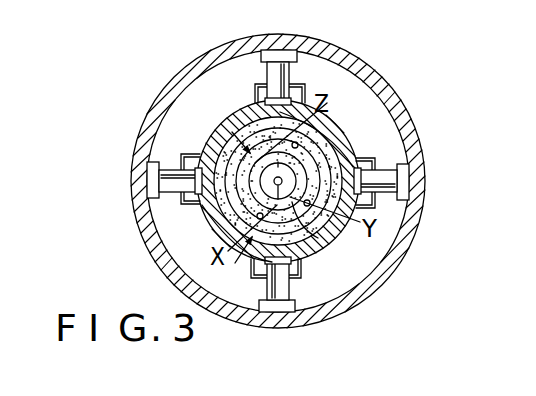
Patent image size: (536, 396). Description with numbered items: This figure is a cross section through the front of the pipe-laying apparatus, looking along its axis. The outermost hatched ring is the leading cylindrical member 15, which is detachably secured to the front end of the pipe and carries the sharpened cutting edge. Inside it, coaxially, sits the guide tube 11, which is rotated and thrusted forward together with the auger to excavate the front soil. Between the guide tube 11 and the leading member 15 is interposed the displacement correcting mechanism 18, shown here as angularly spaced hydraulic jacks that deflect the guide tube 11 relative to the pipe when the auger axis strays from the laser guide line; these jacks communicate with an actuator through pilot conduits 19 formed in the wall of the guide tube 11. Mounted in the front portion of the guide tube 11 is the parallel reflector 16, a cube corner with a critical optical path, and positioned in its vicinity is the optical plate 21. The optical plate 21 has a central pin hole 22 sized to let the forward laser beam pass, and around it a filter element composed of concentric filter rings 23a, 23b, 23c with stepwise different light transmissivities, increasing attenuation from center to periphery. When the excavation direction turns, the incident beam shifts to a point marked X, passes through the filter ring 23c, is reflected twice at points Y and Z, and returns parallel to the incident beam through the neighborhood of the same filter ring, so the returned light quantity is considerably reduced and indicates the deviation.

The guide tube 11 is at (340, 128).
The leading cylindrical member 15 is at (400, 122).
The parallel reflector 16 is at (222, 128).
The displacement correcting mechanism 18 is at (258, 67).
The pilot conduits 19 is at (253, 90).
The optical plate 21 is at (250, 253).
The central pin hole 22 is at (295, 175).
The filter ring 23a is at (346, 138).
The filter ring 23b is at (318, 238).
The filter ring 23c is at (299, 268).